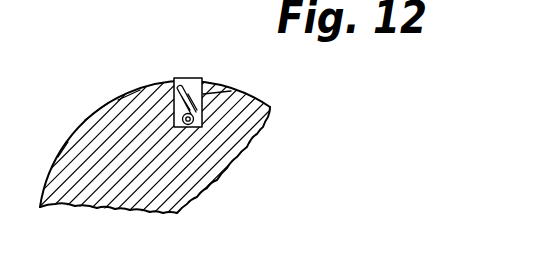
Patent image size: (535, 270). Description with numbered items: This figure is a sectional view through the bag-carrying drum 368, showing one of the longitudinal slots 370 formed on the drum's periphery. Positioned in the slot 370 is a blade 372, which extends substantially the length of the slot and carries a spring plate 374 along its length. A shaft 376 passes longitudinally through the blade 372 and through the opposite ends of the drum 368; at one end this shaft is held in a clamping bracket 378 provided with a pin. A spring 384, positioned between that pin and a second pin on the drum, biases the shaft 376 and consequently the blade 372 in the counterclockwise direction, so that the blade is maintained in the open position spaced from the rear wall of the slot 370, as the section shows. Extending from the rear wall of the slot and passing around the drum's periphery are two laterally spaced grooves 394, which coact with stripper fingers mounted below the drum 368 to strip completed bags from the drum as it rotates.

The drum 368 is at (107, 130).
The longitudinal slot 370 is at (231, 91).
The blade 372 is at (177, 90).
The spring plate 374 is at (196, 94).
The shaft 376 is at (186, 116).
The clamping bracket 378 is at (95, 0).
The spring 384 is at (17, 0).
The groove 394 is at (71, 137).